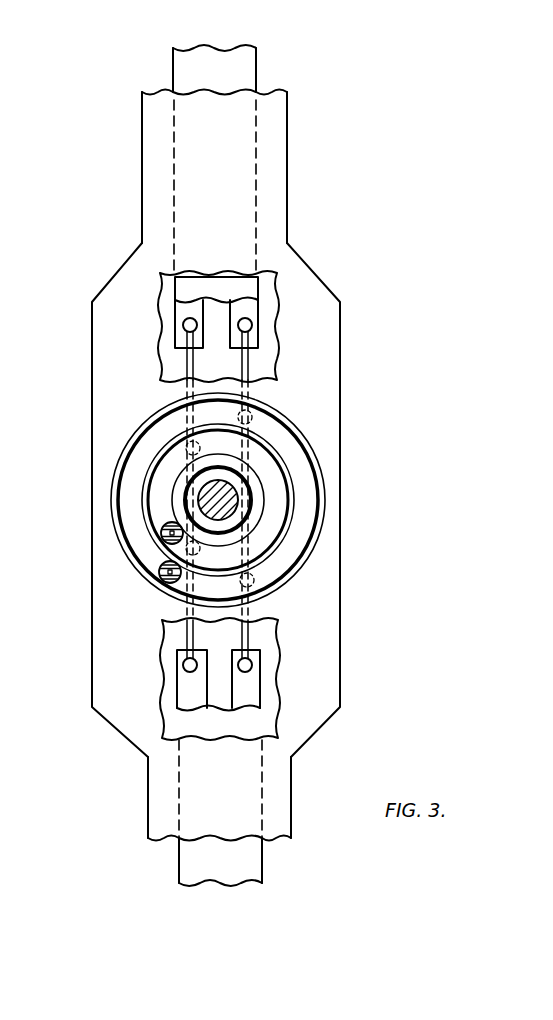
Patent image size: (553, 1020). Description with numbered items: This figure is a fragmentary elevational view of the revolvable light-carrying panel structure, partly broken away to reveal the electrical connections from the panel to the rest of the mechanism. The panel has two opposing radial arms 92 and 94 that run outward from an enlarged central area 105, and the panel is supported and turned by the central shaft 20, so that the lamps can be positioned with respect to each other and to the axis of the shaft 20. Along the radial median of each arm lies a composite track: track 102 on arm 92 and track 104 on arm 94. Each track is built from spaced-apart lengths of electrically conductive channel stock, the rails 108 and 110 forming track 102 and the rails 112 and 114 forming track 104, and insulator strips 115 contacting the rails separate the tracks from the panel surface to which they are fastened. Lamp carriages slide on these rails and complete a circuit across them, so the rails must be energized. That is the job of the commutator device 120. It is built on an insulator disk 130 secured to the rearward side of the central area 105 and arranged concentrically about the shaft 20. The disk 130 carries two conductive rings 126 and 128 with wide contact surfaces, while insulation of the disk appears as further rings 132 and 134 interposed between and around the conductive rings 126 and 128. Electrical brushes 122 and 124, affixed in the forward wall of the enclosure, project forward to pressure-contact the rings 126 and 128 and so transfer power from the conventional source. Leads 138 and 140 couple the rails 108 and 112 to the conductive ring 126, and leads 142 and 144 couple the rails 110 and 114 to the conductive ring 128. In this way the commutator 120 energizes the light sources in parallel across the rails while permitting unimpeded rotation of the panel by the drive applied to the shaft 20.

The shaft 20 is at (222, 483).
The radial arm 92 is at (157, 140).
The radial arm 94 is at (158, 800).
The composite track 102 is at (260, 286).
The composite track 104 is at (257, 725).
The enlarged central area 105 is at (328, 587).
The conductive rail 108 is at (187, 309).
The conductive rail 110 is at (250, 310).
The conductive rail 112 is at (188, 683).
The conductive rail 114 is at (253, 690).
The insulator strip 115 is at (187, 57).
The commutator device 120 is at (312, 427).
The electrical brush 122 is at (160, 532).
The electrical brush 124 is at (163, 582).
The conductive ring 126 is at (297, 477).
The conductive ring 128 is at (308, 498).
The insulator disk 130 is at (162, 413).
The insulation ring 132 is at (157, 453).
The insulation ring 134 is at (182, 482).
The lead 138 is at (187, 357).
The lead 140 is at (189, 635).
The lead 142 is at (245, 357).
The lead 144 is at (250, 635).